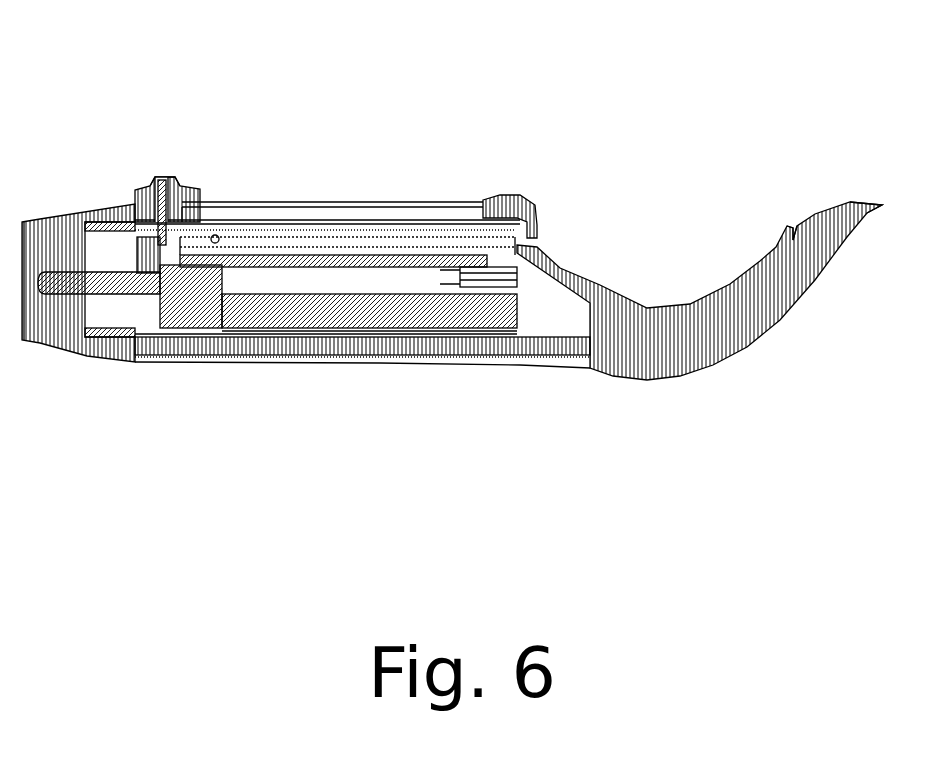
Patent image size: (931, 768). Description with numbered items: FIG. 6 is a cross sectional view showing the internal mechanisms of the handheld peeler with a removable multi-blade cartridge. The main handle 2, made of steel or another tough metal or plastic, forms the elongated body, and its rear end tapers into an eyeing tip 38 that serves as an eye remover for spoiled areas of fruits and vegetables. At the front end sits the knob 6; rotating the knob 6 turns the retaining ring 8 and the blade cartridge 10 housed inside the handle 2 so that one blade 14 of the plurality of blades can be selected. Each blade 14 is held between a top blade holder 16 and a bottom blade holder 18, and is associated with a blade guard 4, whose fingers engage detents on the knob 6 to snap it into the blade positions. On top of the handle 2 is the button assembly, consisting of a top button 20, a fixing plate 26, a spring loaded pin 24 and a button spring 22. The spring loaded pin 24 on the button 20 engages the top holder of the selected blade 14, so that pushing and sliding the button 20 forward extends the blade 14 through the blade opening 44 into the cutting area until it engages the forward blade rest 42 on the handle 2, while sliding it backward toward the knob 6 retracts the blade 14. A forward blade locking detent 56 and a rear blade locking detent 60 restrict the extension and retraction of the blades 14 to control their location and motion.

The main handle 2 is at (695, 350).
The blade guard 4 is at (124, 330).
The knob 6 is at (55, 237).
The retaining ring 8 is at (102, 218).
The blade cartridge 10 is at (398, 313).
The blade 14 is at (263, 243).
The top blade holder 16 is at (150, 255).
The bottom blade holder 18 is at (230, 250).
The top button 20 is at (193, 203).
The button spring 22 is at (170, 178).
The spring loaded pin 24 is at (158, 186).
The fixing plate 26 is at (130, 203).
The eyeing tip 38 is at (882, 205).
The forward blade rest 42 is at (790, 226).
The blade opening 44 is at (540, 210).
The forward blade locking detent 56 is at (497, 268).
The rear blade locking detent 60 is at (216, 243).